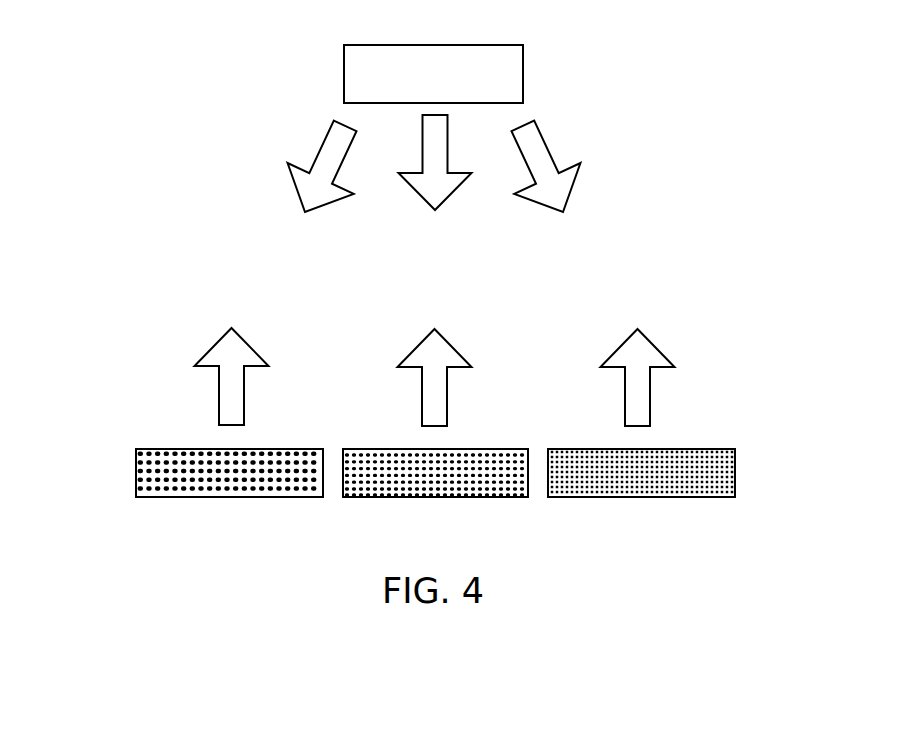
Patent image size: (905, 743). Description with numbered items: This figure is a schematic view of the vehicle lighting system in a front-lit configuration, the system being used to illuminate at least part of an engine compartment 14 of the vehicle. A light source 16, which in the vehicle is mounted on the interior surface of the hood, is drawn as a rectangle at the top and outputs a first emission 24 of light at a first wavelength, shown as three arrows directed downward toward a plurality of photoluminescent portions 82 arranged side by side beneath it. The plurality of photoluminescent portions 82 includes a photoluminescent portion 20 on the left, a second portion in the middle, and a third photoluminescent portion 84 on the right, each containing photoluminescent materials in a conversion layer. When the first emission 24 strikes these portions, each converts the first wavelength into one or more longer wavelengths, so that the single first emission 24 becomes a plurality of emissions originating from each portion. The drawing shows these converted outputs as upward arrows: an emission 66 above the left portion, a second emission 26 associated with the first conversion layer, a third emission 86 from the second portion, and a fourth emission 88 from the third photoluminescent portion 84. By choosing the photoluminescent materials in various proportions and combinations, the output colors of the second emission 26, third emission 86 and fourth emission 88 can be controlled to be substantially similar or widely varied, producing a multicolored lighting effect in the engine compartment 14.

The engine compartment 14 is at (101, 61).
The light source 16 is at (447, 85).
The first emission 24 is at (347, 152).
The photoluminescent portion 20 is at (160, 455).
The second emission 26 is at (400, 453).
The third photoluminescent portion 84 is at (597, 453).
The light emitted from first phosphor 66 is at (217, 352).
The third emission 86 is at (422, 350).
The fourth emission 88 is at (625, 348).
The plurality of photoluminescent portions 82 is at (597, 480).